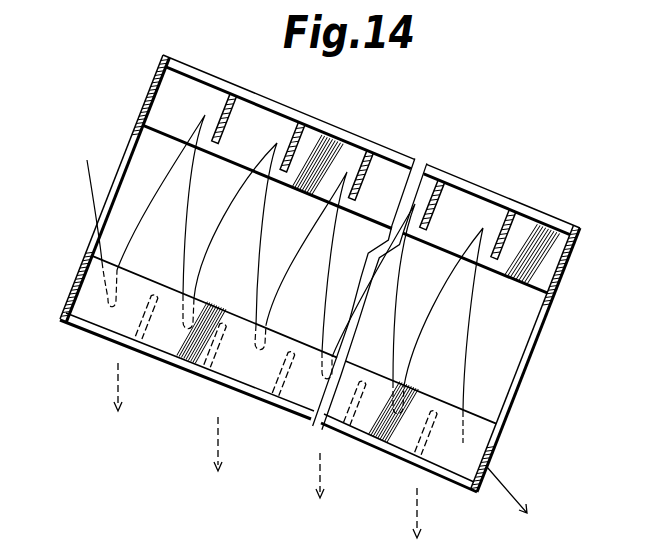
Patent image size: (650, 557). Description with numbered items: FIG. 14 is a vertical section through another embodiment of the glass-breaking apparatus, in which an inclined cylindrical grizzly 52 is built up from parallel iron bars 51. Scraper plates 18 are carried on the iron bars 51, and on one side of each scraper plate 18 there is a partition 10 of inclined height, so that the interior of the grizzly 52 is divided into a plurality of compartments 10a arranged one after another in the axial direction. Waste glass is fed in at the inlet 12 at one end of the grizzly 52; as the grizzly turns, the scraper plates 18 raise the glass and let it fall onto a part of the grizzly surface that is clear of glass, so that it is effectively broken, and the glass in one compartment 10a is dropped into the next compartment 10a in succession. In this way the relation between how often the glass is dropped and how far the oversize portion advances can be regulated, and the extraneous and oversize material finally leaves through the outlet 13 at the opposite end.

The partition 10 is at (440, 187).
The compartment 10a is at (268, 115).
The inlet 12 is at (141, 143).
The outlet 13 is at (520, 343).
The scraper plate 18 is at (532, 277).
The iron bar 51 is at (335, 135).
The inclined cylindrical grizzly 52 is at (222, 67).